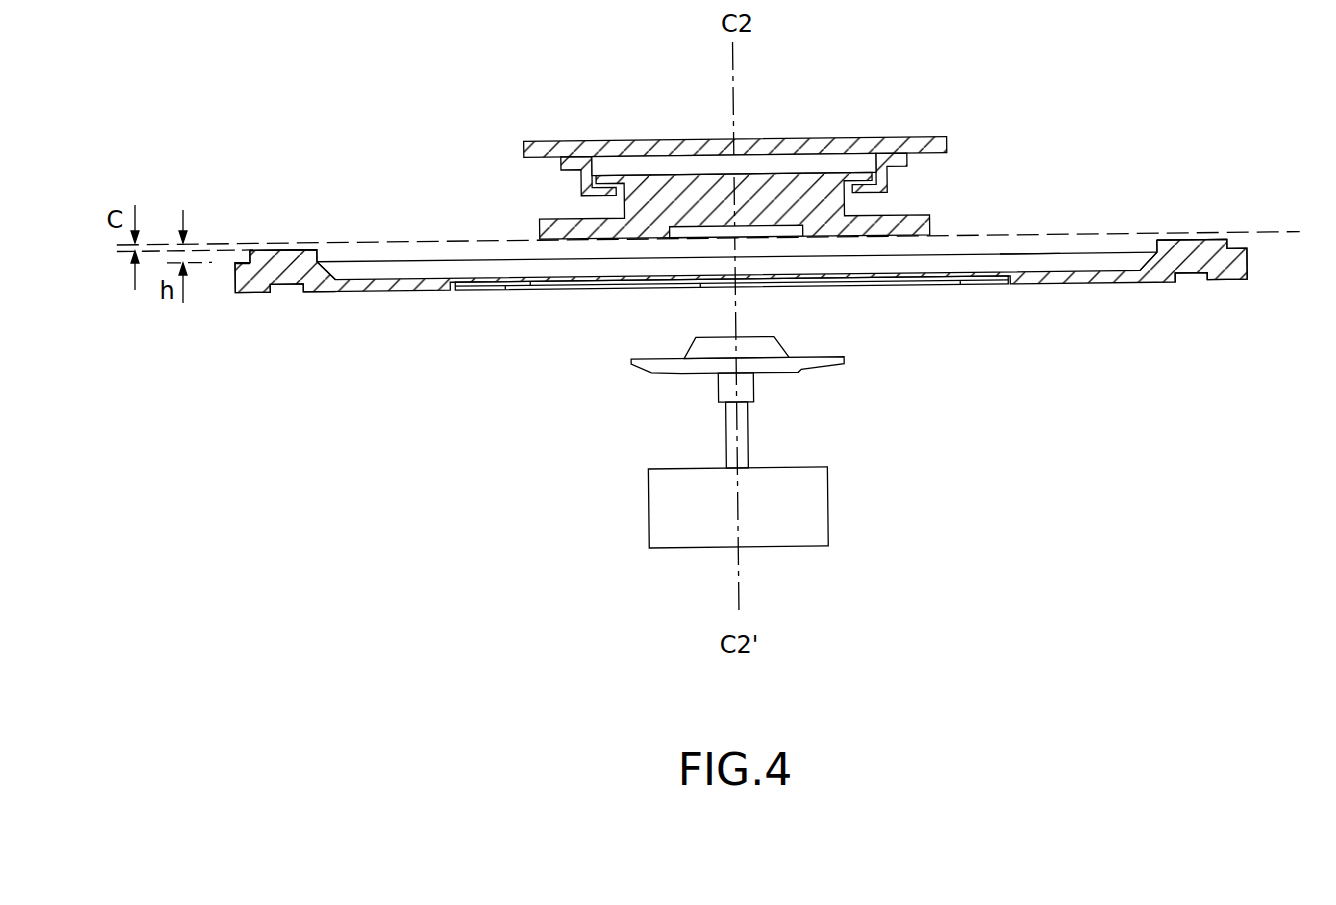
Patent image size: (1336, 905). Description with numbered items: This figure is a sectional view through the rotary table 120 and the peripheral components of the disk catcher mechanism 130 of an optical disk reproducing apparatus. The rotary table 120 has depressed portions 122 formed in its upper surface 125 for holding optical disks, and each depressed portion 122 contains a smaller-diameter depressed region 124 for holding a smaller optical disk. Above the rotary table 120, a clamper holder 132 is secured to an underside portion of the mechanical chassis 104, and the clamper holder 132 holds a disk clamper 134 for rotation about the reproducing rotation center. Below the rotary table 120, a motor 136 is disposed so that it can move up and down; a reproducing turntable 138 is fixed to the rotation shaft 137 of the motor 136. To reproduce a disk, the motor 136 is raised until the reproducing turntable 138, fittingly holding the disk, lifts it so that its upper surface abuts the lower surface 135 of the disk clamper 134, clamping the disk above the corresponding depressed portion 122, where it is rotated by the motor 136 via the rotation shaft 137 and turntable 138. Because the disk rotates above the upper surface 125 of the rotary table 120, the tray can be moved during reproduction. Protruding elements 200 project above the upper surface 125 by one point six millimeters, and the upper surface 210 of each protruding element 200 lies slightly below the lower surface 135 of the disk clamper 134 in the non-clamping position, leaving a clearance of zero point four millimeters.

The mechanical chassis 104 is at (853, 139).
The rotary table 120 is at (1223, 282).
The depressed portion 122 is at (360, 268).
The smaller-diameter depressed region 124 is at (890, 284).
The upper surface of the rotary table 125 is at (1033, 252).
The disk catcher mechanism 130 is at (460, 115).
The clamper holder 132 is at (560, 171).
The disk clamper 134 is at (928, 217).
The lower surface of the disk clamper 135 is at (915, 240).
The motor 136 is at (827, 508).
The rotation shaft 137 is at (745, 437).
The reproducing turntable 138 is at (843, 362).
The protruding element 200 is at (260, 248).
The upper surface of the protruding element 210 is at (298, 248).